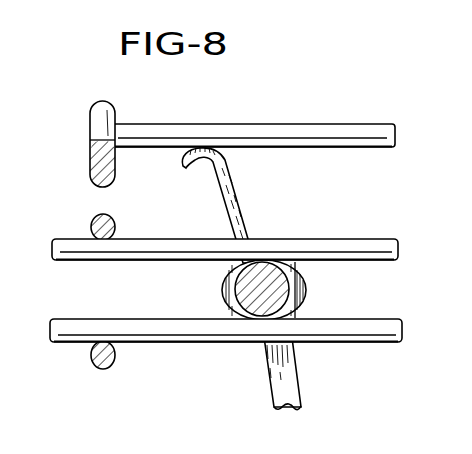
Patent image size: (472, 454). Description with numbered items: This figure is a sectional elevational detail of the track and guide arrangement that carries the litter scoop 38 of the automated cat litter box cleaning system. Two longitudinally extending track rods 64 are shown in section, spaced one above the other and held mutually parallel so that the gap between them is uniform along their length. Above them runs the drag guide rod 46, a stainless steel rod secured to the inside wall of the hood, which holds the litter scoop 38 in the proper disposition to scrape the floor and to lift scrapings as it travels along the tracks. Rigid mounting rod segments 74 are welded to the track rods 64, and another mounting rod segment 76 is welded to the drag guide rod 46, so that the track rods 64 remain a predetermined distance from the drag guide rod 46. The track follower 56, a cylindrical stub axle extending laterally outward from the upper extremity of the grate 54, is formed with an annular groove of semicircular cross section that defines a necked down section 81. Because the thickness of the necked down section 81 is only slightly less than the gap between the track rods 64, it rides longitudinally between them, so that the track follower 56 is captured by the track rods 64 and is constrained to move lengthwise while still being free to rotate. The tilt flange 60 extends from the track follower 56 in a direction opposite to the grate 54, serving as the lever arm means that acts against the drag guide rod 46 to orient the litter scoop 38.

The litter scoop 38 is at (304, 369).
The drag guide rod 46 is at (287, 132).
The grate 54 is at (300, 390).
The track follower 56 is at (218, 278).
The tilt flange 60 is at (240, 188).
The track rods 64 is at (143, 238).
The mounting rod segments 74 is at (88, 218).
The mounting rod segment 76 is at (97, 113).
The necked down section 81 is at (308, 286).